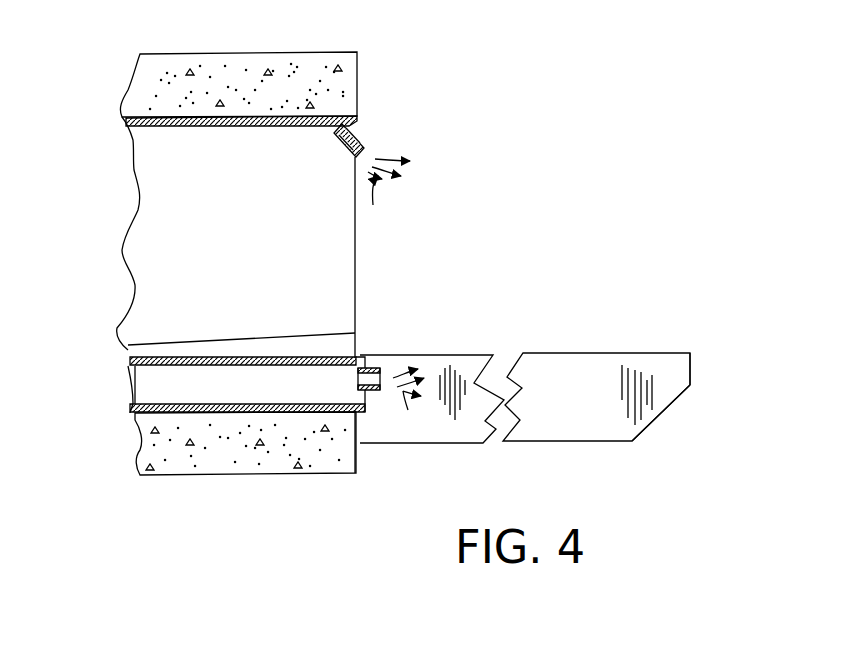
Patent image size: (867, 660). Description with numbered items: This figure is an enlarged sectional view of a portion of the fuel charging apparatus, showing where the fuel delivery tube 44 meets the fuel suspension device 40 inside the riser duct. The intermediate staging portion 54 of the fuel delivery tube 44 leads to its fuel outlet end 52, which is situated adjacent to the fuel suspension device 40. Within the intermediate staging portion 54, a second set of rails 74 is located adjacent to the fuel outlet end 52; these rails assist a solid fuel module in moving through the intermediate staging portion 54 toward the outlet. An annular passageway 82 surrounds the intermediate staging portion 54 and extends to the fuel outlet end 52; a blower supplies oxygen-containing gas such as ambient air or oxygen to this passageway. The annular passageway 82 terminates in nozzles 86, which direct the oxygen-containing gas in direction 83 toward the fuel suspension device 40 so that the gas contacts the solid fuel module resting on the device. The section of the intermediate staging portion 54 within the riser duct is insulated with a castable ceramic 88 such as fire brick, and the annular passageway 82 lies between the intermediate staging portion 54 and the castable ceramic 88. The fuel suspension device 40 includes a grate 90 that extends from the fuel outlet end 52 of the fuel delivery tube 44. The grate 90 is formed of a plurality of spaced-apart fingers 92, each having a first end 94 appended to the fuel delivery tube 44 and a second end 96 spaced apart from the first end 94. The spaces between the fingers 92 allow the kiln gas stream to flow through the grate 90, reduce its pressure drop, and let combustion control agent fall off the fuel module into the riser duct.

The fuel suspension device 40 is at (778, 321).
The fuel delivery tube 44 is at (128, 413).
The fuel outlet end 52 is at (355, 110).
The intermediate staging portion 54 is at (213, 67).
The second set of rails 74 is at (212, 342).
The annular passageway 82 is at (145, 140).
The direction 83 is at (396, 299).
The nozzles 86 is at (363, 136).
The castable ceramic 88 is at (320, 62).
The grate 90 is at (663, 407).
The spaced-apart fingers 92 is at (570, 370).
The first end 94 is at (360, 445).
The second end 96 is at (692, 383).